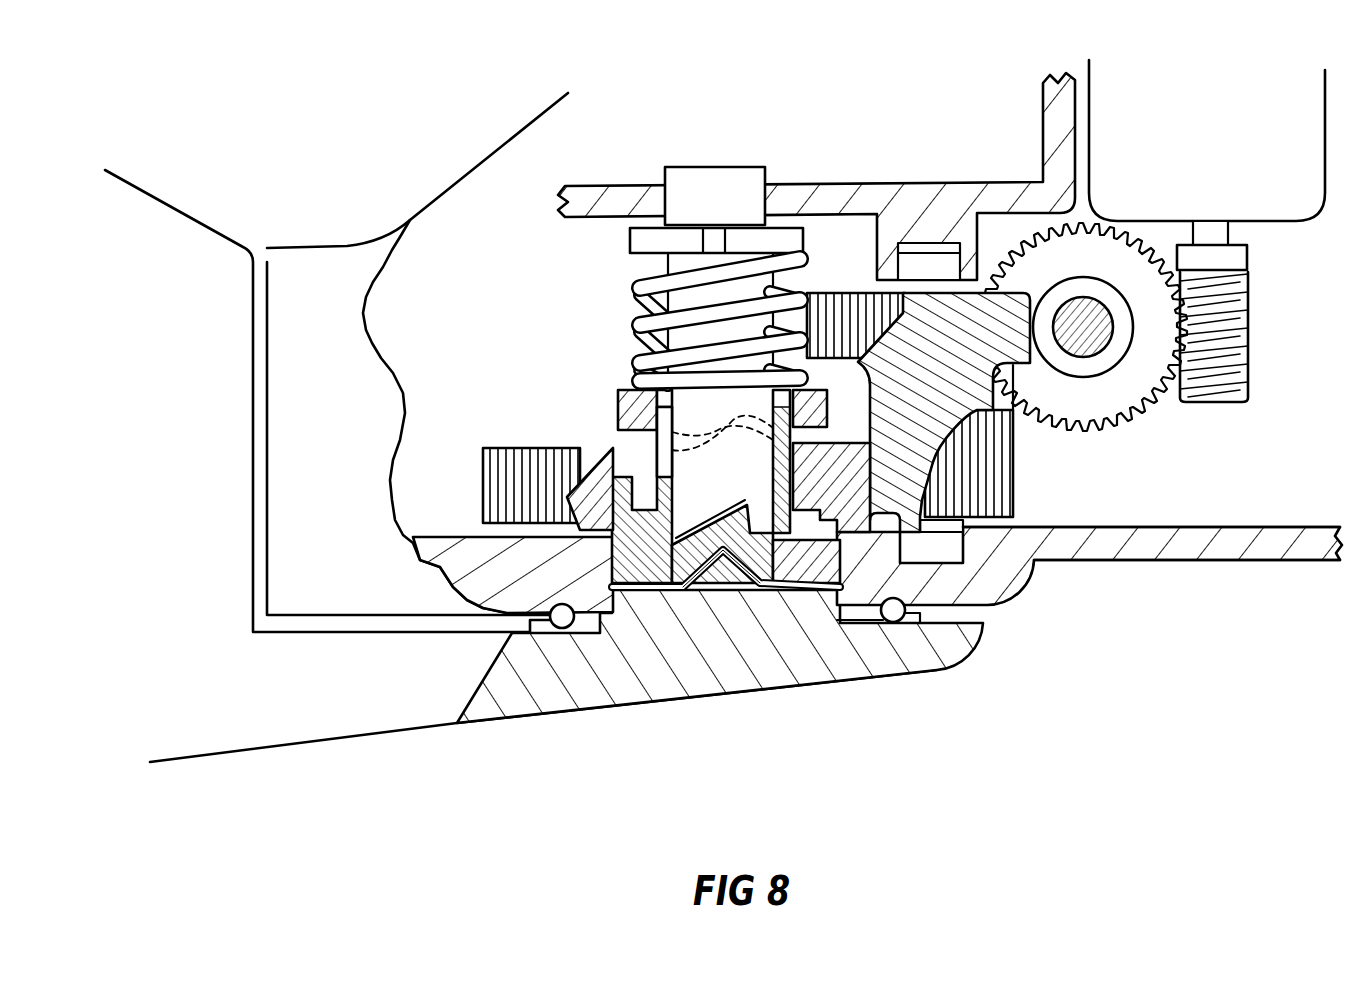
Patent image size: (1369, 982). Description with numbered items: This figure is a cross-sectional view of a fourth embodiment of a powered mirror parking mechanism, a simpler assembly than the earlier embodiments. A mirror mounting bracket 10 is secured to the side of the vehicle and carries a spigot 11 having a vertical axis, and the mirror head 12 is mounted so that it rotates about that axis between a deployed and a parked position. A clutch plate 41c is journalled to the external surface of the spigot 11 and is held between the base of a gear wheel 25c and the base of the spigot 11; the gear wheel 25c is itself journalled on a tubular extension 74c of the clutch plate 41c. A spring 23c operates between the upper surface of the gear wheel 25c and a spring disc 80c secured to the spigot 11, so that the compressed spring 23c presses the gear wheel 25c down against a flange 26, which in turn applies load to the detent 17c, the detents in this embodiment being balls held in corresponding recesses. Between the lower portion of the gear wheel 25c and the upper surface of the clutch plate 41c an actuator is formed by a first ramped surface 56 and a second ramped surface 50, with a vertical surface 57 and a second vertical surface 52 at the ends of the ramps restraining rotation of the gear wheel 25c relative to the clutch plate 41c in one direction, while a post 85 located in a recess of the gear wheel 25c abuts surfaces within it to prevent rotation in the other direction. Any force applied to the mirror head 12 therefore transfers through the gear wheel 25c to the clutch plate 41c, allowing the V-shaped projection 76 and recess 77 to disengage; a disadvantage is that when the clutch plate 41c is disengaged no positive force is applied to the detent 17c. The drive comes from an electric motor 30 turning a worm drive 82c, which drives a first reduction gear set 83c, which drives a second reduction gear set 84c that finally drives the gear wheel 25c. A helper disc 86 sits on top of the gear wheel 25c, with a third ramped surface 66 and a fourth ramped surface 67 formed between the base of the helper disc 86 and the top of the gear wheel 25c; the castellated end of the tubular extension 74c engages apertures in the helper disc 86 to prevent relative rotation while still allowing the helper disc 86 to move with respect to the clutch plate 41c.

The mirror mounting bracket 10 is at (400, 707).
The spigot 11 is at (704, 185).
The mirror head 12 is at (1217, 560).
The detent 17c is at (540, 633).
The spring 23c is at (640, 292).
The gear wheel 25c is at (457, 462).
The flange 26 is at (595, 532).
The electric motor 30 is at (1265, 192).
The clutch plate 41c is at (605, 557).
The second ramped surface 50 is at (707, 587).
The second vertical surface 52 is at (748, 528).
The first ramped surface 56 is at (712, 525).
The vertical surface 57 is at (838, 595).
The third ramped surface 66 is at (673, 383).
The fourth ramped surface 67 is at (640, 448).
The tubular extension 74c is at (697, 572).
The V-shaped projection 76 is at (728, 592).
The V-shaped recess 77 is at (783, 590).
The spring disc 80c is at (813, 228).
The worm drive 82c is at (1218, 372).
The first reduction gear set 83c is at (1119, 425).
The second reduction gear set 84c is at (1025, 463).
The post 85 is at (615, 447).
The helper disc 86 is at (810, 312).